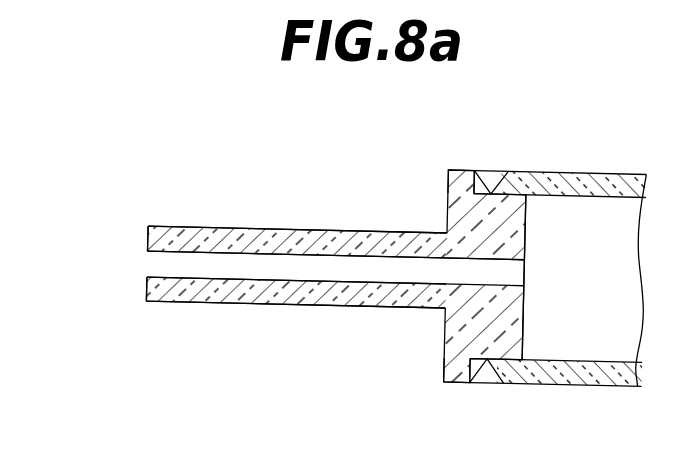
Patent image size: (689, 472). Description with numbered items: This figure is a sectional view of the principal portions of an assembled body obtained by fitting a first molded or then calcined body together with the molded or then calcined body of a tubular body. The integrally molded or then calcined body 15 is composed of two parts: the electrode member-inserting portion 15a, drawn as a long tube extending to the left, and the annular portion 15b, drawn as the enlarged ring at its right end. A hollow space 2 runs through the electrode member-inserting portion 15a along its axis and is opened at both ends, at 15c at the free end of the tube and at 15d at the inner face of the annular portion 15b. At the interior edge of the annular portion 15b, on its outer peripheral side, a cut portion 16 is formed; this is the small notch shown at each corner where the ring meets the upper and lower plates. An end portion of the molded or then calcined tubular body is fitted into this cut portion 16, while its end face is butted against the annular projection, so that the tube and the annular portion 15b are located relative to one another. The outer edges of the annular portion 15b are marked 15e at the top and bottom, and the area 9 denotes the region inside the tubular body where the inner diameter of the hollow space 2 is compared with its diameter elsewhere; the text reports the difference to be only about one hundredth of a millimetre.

The integrally molded or then calcined body 15 is at (289, 224).
The electrode member-inserting portion 15a is at (211, 229).
The annular portion 15b is at (496, 215).
The opening of hollow space 15c is at (148, 271).
The opening of hollow space 15d is at (527, 268).
The flange tip 15e is at (451, 169).
The cut portion 16 is at (508, 170).
The hollow space 2 is at (268, 254).
The area inside the tubular body 9 is at (483, 384).